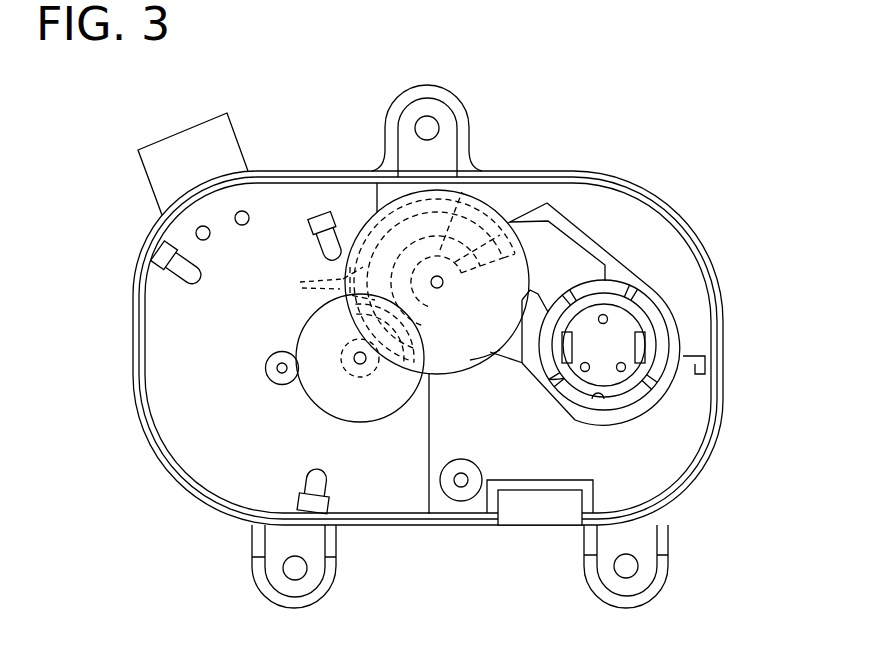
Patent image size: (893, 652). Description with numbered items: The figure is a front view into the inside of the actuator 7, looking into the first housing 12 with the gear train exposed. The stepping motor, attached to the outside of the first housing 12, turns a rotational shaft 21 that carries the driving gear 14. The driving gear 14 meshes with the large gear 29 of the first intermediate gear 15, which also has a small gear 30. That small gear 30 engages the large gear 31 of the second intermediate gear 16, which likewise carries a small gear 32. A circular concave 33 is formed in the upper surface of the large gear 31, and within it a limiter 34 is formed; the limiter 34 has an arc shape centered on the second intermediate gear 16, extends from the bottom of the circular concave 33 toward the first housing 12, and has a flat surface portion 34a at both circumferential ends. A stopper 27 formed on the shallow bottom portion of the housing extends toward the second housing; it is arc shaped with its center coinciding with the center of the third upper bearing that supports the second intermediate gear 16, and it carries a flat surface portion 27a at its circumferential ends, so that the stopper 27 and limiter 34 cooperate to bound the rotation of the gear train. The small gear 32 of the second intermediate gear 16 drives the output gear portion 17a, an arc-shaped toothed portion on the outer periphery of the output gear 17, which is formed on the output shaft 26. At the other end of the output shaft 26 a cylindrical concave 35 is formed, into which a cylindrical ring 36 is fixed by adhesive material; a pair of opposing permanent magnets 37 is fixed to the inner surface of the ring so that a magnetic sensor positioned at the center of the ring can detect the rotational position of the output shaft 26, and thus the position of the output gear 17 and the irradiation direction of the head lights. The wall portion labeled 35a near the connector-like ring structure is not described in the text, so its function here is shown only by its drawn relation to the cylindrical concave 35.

The actuator 7 is at (733, 163).
The first housing 12 is at (672, 216).
The driving gear 14 is at (273, 384).
The first intermediate gear 15 is at (388, 422).
The second intermediate gear 16 is at (447, 374).
The output gear 17 is at (585, 232).
The output gear portion 17a is at (533, 207).
The rotational shaft 21 is at (268, 360).
The output shaft 26 is at (638, 418).
The stopper 27 is at (348, 316).
The flat surface portion 27a is at (293, 279).
The large gear 29 is at (362, 424).
The small gear 30 is at (353, 374).
The large gear 31 is at (481, 368).
The small gear 32 is at (486, 215).
The circular concave 33 is at (462, 192).
The limiter 34 is at (356, 208).
The flat surface portion 34a is at (298, 299).
The cylindrical concave 35 is at (594, 410).
The connector wall 35a is at (562, 394).
The cylindrical ring 36 is at (664, 366).
The permanent magnets 37 is at (634, 346).